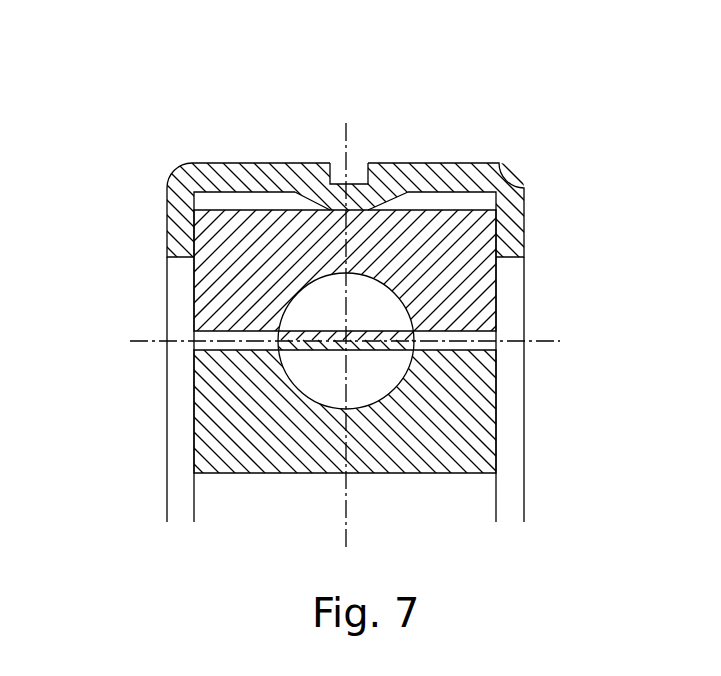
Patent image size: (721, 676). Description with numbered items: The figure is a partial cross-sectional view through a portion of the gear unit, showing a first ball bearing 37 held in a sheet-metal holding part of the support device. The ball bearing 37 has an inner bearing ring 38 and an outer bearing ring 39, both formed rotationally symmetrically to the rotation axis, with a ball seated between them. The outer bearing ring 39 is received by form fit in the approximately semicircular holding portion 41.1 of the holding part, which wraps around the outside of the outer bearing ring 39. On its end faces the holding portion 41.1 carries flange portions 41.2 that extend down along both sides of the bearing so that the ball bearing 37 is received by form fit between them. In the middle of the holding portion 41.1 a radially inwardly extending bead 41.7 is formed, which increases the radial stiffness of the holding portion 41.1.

The first ball bearing 37 is at (194, 298).
The inner bearing ring 38 is at (249, 447).
The outer bearing ring 39 is at (249, 296).
The holding portion 41.1 is at (368, 163).
The flange portions 41.2 is at (167, 216).
The radially inwardly extending bead 41.7 is at (329, 165).